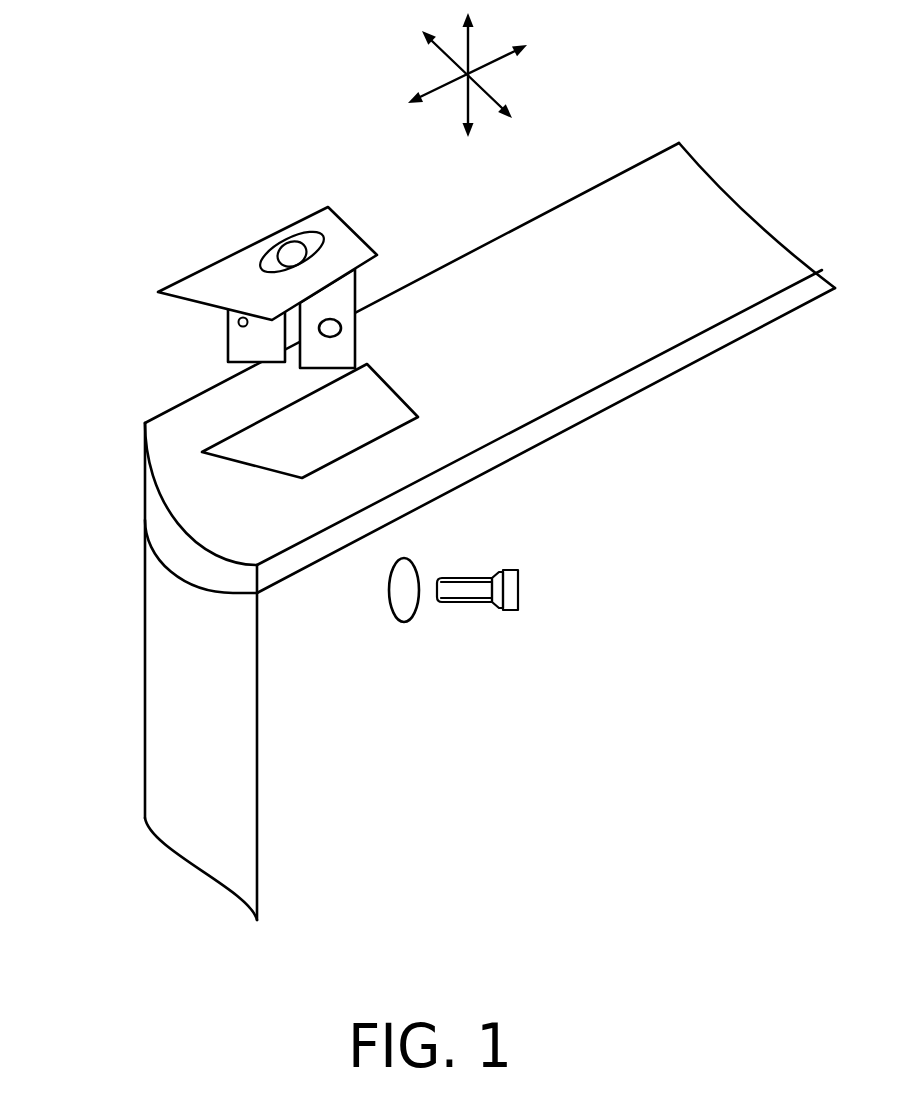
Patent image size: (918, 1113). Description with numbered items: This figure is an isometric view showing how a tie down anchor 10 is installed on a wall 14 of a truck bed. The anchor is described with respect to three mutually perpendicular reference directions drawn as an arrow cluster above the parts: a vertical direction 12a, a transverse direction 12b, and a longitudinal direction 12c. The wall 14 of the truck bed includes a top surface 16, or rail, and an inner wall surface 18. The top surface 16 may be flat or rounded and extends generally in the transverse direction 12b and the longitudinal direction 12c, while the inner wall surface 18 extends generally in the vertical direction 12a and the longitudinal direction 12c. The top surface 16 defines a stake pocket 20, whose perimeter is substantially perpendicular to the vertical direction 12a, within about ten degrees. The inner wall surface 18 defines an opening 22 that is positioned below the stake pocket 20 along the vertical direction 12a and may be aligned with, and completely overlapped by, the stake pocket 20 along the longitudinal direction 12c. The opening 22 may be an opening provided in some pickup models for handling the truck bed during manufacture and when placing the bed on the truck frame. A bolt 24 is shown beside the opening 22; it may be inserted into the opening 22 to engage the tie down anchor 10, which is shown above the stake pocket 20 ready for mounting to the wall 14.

The tie down anchor 10 is at (246, 233).
The vertical direction 12a is at (468, 52).
The transverse direction 12b is at (490, 105).
The longitudinal direction 12c is at (505, 58).
The wall 14 is at (138, 648).
The top surface 16 is at (490, 368).
The inner wall surface 18 is at (245, 742).
The stake pocket 20 is at (363, 448).
The opening 22 is at (413, 617).
The bolt 24 is at (468, 578).